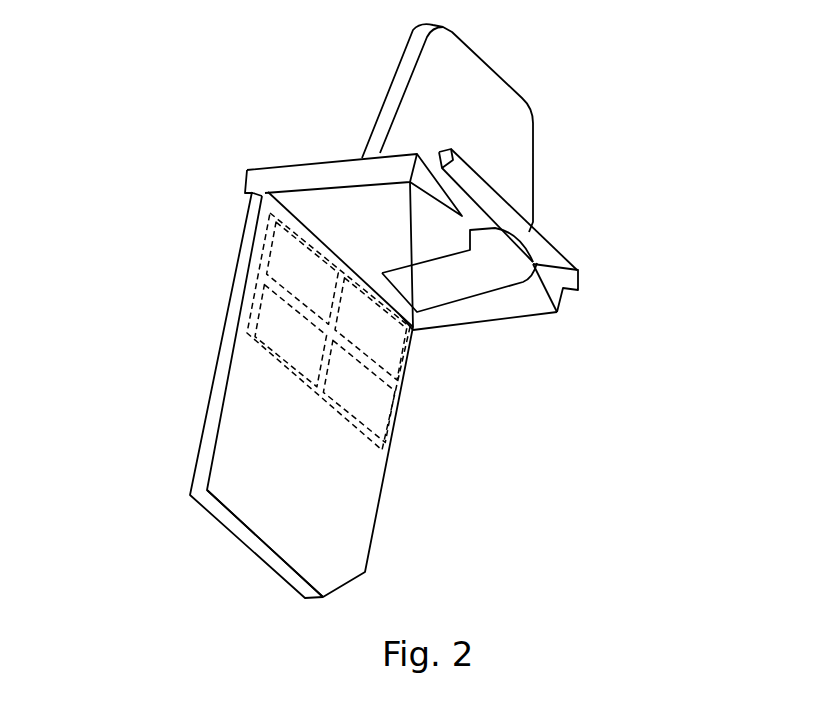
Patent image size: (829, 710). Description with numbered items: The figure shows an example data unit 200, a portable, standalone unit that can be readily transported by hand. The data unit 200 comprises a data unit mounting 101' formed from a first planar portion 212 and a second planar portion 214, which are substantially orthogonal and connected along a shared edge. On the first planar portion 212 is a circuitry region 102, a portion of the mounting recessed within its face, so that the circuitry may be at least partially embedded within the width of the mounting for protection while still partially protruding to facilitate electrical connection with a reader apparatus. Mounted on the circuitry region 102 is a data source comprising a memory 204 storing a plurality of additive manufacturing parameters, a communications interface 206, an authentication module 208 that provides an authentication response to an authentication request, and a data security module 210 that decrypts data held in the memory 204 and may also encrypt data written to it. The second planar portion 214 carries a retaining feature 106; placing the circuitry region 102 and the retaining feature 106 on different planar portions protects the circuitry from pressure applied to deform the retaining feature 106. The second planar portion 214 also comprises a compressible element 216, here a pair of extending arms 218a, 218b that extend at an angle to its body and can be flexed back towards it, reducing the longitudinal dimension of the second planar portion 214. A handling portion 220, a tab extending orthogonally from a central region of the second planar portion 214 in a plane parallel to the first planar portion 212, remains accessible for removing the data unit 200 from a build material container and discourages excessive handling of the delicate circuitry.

The data unit 200 is at (255, 114).
The data unit mounting 101' is at (187, 143).
The second planar portion 214 is at (350, 203).
The handling portion 220 is at (483, 116).
The compressible element 216 is at (647, 187).
The extending arm 218a is at (460, 172).
The extending arm 218b is at (567, 268).
The retaining feature 106 is at (440, 288).
The circuitry region 102 is at (290, 373).
The memory 204 is at (273, 262).
The communications interface 206 is at (278, 325).
The authentication module 208 is at (382, 352).
The data security module 210 is at (370, 412).
The first planar portion 212 is at (283, 490).